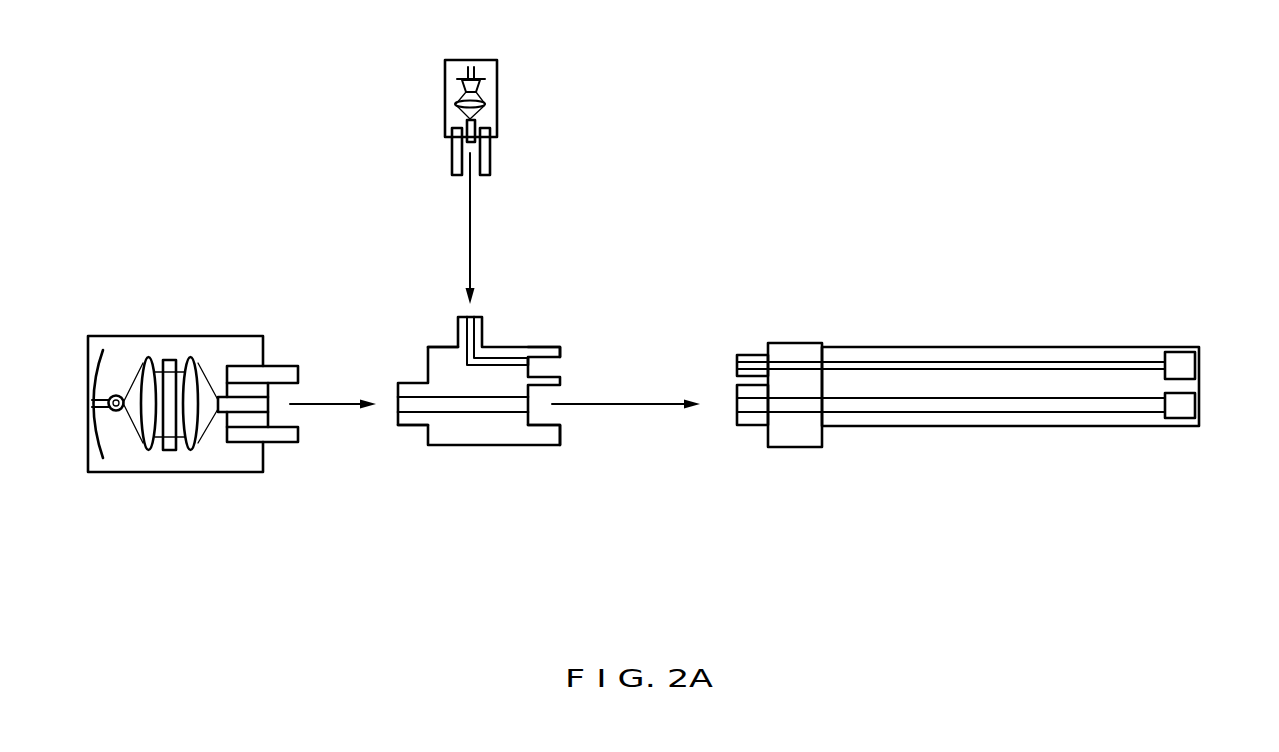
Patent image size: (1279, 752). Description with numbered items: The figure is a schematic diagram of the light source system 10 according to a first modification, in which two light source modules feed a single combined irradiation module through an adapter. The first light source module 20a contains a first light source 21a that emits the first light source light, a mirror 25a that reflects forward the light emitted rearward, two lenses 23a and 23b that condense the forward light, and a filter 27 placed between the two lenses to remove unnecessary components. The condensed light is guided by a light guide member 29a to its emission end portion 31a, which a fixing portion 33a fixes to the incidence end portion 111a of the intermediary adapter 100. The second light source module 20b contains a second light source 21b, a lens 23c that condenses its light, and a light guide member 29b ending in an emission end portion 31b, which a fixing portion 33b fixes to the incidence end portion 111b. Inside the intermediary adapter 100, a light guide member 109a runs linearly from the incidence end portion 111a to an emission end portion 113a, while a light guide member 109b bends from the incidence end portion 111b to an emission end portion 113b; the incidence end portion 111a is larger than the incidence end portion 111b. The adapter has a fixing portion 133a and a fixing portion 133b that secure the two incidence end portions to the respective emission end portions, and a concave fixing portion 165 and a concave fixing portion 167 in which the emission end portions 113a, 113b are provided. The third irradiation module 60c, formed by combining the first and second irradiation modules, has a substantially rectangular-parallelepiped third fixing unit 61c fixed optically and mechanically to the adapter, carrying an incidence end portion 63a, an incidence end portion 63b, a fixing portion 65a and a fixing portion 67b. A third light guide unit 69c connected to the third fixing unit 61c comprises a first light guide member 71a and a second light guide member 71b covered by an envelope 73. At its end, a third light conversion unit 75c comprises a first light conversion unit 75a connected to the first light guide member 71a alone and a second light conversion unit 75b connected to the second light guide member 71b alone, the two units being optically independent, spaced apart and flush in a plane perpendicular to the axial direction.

The light source system 10 is at (768, 97).
The first light source module 20a is at (257, 310).
The second light source module 20b is at (529, 87).
The first light source 21a is at (116, 412).
The second light source 21b is at (465, 87).
The lens 23a is at (147, 357).
The lens 23b is at (197, 357).
The lens 23c is at (457, 105).
The mirror 25a is at (94, 368).
The filter 27 is at (170, 358).
The light guide member 29a is at (238, 414).
The light guide member 29b is at (460, 137).
The emission end portion 31a is at (263, 415).
The emission end portion 31b is at (474, 140).
The fixing portion 33a is at (283, 441).
The fixing portion 33b is at (490, 168).
The intermediary adapter 100 is at (477, 524).
The light guide member 109a is at (478, 406).
The light guide member 109b is at (500, 360).
The incidence end portion 111a is at (398, 405).
The incidence end portion 111b is at (460, 317).
The emission end portion 113a is at (530, 408).
The emission end portion 113b is at (530, 365).
The fixing portion 133a is at (412, 425).
The fixing portion 133b is at (458, 341).
The concave fixing portion 165 is at (543, 438).
The concave fixing portion 167 is at (548, 347).
The third irradiation module 60c is at (953, 311).
The third fixing unit 61c is at (807, 348).
The incidence end portion 63a is at (737, 405).
The incidence end portion 63b is at (737, 367).
The fixing portion 65a is at (755, 425).
The fixing portion 67b is at (757, 355).
The third light guide unit 69c is at (1010, 348).
The first light guide member 71a is at (1065, 412).
The second light guide member 71b is at (1063, 363).
The envelope 73 is at (1122, 357).
The first light conversion unit 75a is at (1194, 405).
The second light conversion unit 75b is at (1182, 358).
The third light conversion unit 75c is at (1262, 297).